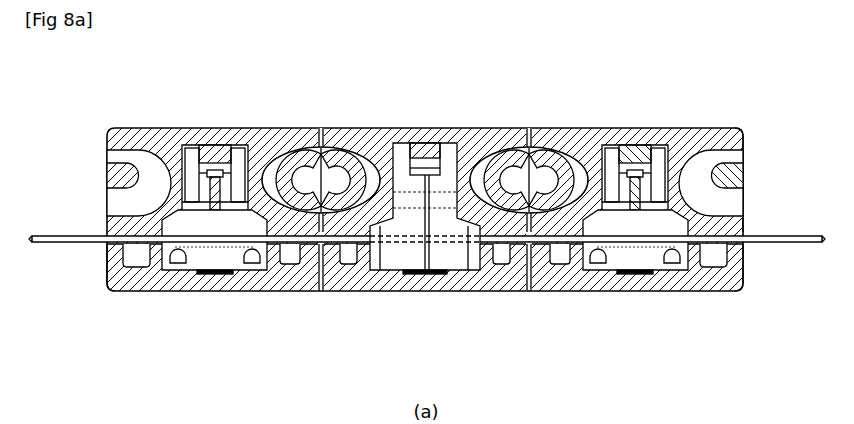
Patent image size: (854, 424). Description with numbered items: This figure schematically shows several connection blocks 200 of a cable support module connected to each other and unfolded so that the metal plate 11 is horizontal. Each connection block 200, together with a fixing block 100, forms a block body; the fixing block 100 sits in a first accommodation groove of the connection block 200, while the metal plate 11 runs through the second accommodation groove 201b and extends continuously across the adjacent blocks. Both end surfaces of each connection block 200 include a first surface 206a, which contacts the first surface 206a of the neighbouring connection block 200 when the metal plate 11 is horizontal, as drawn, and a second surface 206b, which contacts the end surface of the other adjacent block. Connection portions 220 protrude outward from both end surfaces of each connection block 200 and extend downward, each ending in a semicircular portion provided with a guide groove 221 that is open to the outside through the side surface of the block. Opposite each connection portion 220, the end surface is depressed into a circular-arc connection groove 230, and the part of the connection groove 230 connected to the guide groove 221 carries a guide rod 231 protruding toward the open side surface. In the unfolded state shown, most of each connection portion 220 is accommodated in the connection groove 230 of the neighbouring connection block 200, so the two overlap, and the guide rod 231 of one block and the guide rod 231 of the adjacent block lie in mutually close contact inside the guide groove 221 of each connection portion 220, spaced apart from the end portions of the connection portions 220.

The metal plate 11 is at (63, 245).
The fixing block 100 is at (213, 272).
The connection block 200 is at (182, 128).
The second accommodation groove 201b is at (96, 247).
The first surface 206a is at (530, 72).
The second surface 206b is at (530, 282).
The connection portion 220 is at (277, 148).
The guide groove 221 is at (289, 264).
The connection groove 230 is at (156, 172).
The guide rod 231 is at (120, 168).